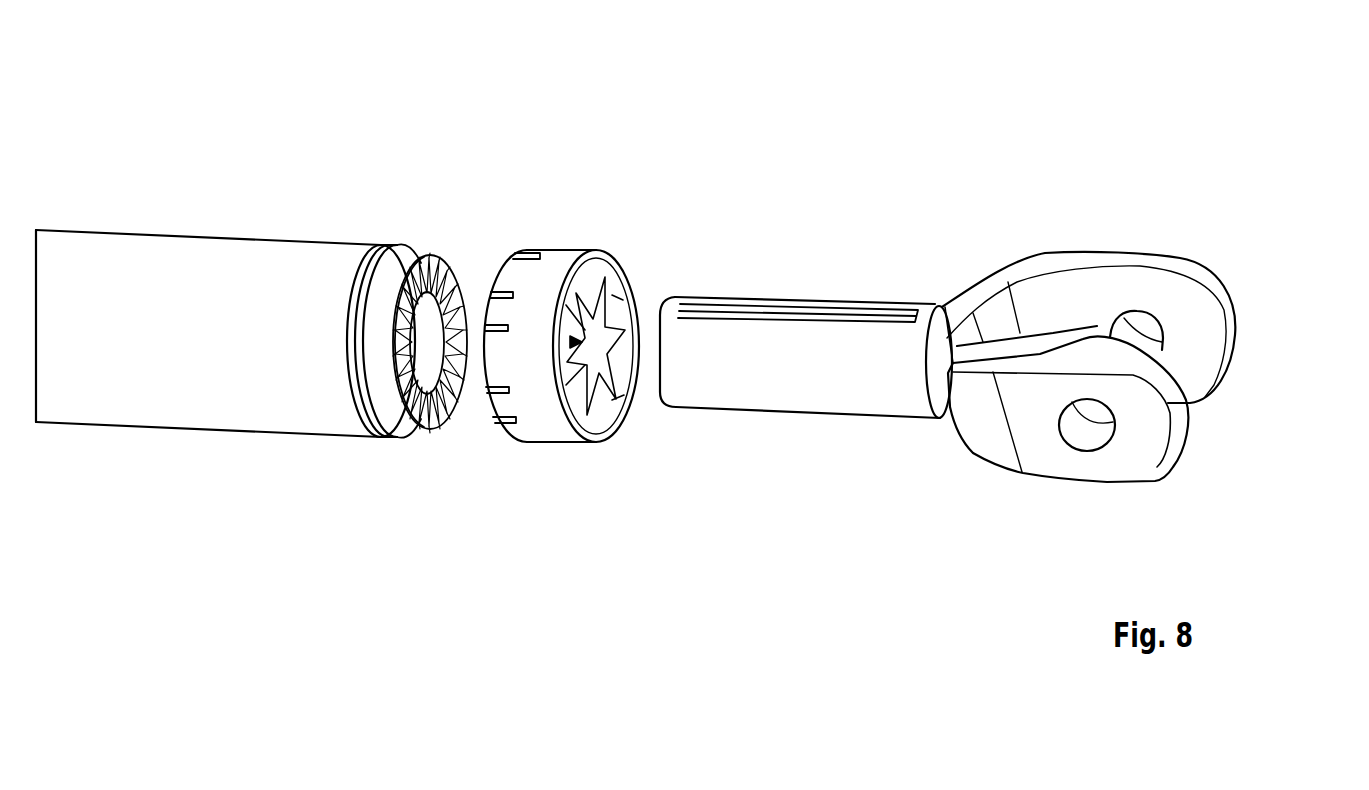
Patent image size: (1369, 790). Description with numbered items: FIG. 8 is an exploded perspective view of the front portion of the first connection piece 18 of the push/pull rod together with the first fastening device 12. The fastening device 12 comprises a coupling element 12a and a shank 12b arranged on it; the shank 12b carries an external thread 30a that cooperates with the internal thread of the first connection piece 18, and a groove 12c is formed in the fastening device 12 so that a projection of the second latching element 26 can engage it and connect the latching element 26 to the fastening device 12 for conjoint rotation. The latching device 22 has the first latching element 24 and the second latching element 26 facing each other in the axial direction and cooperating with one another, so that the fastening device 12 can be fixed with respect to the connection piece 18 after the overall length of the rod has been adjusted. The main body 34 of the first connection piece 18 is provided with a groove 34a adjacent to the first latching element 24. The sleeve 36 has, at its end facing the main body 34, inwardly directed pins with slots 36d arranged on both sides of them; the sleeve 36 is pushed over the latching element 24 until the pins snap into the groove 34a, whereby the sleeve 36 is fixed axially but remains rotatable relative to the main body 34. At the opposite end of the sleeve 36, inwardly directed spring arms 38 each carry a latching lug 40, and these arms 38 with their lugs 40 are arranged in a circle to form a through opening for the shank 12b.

The fastening device 12 is at (1014, 349).
The coupling element 12a is at (1227, 323).
The shank 12b is at (806, 349).
The groove 12c is at (847, 313).
The first connection piece 18 is at (246, 345).
The latching device 22 is at (567, 383).
The first latching element 24 is at (476, 262).
The second latching element 26 is at (613, 383).
The thread 30a is at (733, 412).
The main body 34 is at (246, 345).
The groove 34a is at (385, 245).
The sleeve 36 is at (563, 262).
The slots 36d is at (527, 252).
The spring arm 38 is at (635, 298).
The latching lug 40 is at (613, 260).